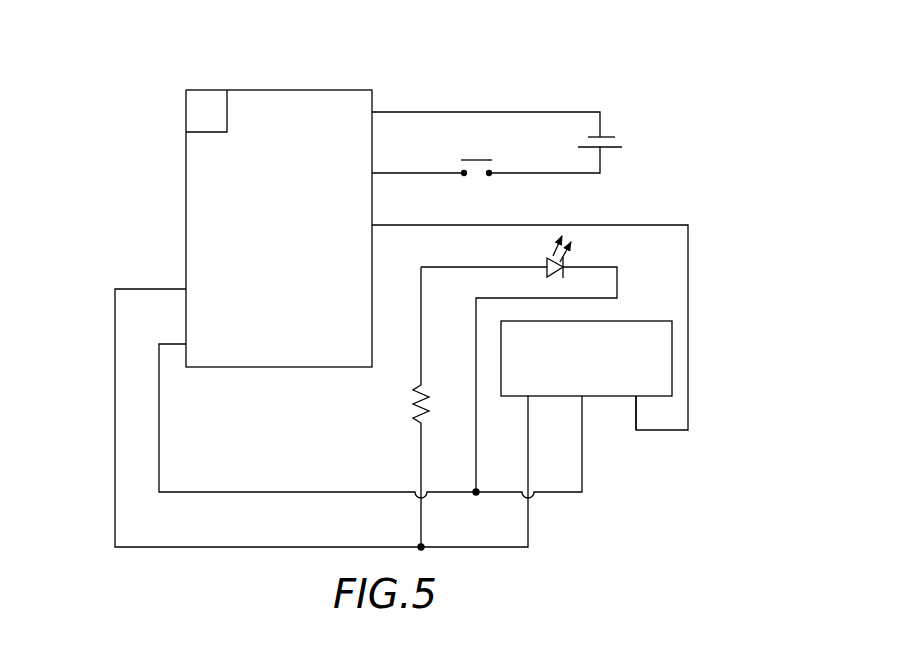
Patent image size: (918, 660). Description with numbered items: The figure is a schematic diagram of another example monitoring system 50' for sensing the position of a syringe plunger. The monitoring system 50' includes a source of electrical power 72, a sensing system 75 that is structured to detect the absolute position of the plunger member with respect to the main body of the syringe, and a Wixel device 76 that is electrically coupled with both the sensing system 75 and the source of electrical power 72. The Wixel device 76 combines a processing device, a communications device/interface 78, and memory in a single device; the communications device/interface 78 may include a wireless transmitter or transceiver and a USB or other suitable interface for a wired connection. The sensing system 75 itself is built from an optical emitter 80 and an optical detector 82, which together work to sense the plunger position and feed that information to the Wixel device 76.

The monitoring system 50' is at (428, 353).
The source of electrical power 72 is at (632, 125).
The sensing system 75 is at (660, 303).
The Wixel device 76 is at (251, 104).
The communications device/interface 78 is at (190, 110).
The optical emitter 80 is at (540, 257).
The optical detector 82 is at (603, 388).